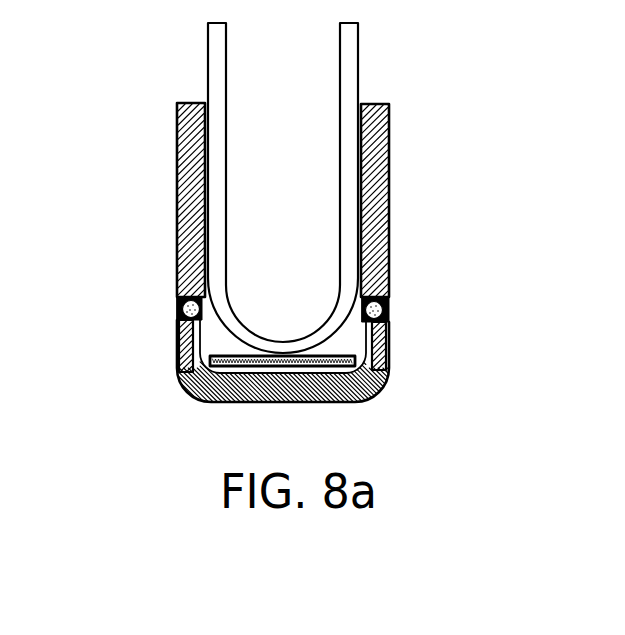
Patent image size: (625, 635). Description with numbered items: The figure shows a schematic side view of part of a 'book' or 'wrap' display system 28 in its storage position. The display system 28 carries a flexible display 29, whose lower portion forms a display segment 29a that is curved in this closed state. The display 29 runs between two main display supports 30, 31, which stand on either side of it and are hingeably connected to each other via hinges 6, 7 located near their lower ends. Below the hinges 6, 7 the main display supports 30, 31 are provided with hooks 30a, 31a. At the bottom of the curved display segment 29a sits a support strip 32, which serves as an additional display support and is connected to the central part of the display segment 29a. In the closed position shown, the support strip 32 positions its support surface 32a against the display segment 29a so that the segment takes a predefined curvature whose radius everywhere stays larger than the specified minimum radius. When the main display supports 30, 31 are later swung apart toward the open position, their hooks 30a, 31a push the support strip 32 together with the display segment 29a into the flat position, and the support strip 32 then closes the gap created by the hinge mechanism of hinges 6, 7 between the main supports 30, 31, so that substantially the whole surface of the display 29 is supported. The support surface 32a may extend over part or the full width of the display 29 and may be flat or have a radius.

The display system 28 is at (158, 227).
The flexible display 29 is at (350, 59).
The display segment 29a is at (288, 348).
The main display support 30 is at (187, 150).
The hook 30a is at (182, 337).
The main display support 31 is at (385, 147).
The hook 31a is at (387, 337).
The support strip 32 is at (355, 360).
The support surface 32a is at (272, 355).
The hinge 6 is at (180, 305).
The hinge 7 is at (383, 308).